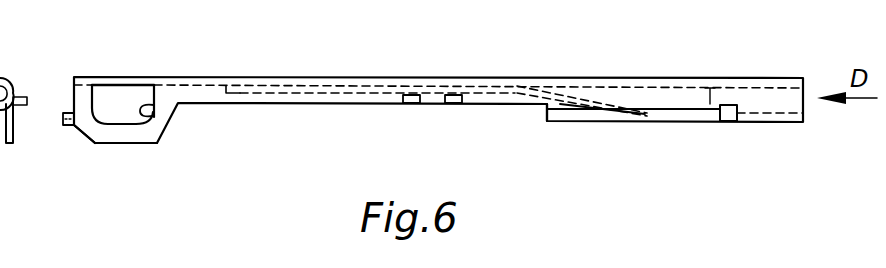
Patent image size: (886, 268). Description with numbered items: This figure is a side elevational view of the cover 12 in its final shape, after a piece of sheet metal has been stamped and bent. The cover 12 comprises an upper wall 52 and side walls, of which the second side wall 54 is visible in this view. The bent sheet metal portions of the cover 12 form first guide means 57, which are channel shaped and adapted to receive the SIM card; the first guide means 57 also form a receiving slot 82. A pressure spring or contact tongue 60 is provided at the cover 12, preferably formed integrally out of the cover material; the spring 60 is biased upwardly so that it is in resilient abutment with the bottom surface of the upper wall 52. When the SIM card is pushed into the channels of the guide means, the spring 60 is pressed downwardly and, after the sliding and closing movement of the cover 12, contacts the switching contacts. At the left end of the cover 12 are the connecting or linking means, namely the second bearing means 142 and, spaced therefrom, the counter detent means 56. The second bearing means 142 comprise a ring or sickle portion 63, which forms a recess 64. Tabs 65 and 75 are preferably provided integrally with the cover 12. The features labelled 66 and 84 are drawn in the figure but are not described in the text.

The cover 12 is at (94, 216).
The upper wall 52 is at (193, 77).
The second side wall 54 is at (205, 97).
The counter detent means 56 is at (433, 104).
The first guide means 57 is at (631, 127).
The pressure spring 60 is at (338, 92).
The sickle portion 63 is at (101, 134).
The recess 64 is at (150, 116).
The tab 65 is at (63, 124).
The pocket 66 is at (93, 81).
The tab 75 is at (16, 98).
The receiving slot 82 is at (727, 112).
The lower ledge 84 is at (580, 121).
The second bearing means 142 is at (135, 155).